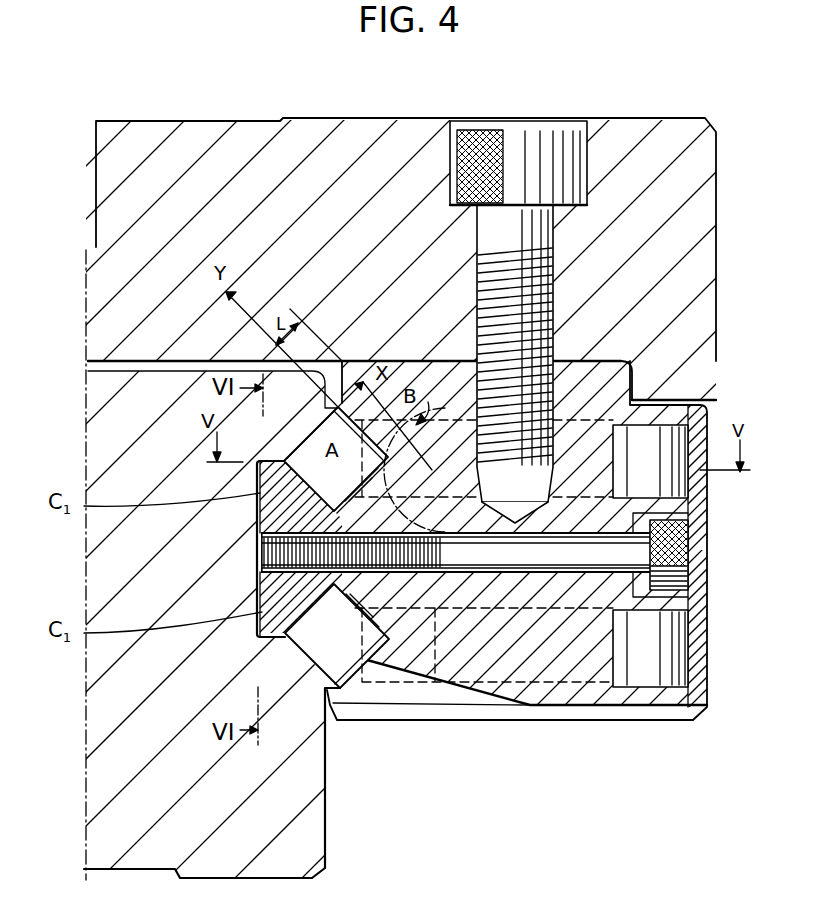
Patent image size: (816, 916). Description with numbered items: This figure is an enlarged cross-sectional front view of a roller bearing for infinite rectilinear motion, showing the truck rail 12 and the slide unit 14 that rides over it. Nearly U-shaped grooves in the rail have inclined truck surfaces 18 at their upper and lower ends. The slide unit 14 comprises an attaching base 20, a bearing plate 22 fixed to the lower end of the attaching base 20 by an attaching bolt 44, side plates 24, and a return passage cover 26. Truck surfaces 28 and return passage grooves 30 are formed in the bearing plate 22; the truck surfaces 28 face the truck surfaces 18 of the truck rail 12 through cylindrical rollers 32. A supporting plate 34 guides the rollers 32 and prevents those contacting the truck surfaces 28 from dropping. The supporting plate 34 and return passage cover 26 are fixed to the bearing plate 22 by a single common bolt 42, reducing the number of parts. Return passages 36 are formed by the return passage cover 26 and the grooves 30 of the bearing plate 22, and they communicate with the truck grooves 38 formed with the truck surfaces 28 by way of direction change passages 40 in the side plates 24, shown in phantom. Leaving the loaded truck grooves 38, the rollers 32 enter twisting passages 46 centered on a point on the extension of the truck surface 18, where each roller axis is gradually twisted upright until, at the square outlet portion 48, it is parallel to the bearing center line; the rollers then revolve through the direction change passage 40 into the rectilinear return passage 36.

The truck rail 12 is at (151, 674).
The slide unit 14 is at (603, 122).
The truck surfaces 18 is at (287, 447).
The attaching base 20 is at (220, 135).
The bearing plate 22 is at (650, 362).
The side plates 24 is at (372, 710).
The return passage cover 26 is at (690, 670).
The truck surfaces 28 is at (260, 512).
The return passage grooves 30 is at (620, 460).
The cylindrical rollers 32 is at (260, 473).
The supporting plate 34 is at (262, 585).
The return passages 36 is at (655, 427).
The truck grooves 38 is at (262, 552).
The direction change passages 40 is at (441, 420).
The common bolt 42 is at (670, 572).
The attaching bolt 44 is at (530, 150).
The twisting passages 46 is at (690, 522).
The outlet portion 48 is at (455, 430).